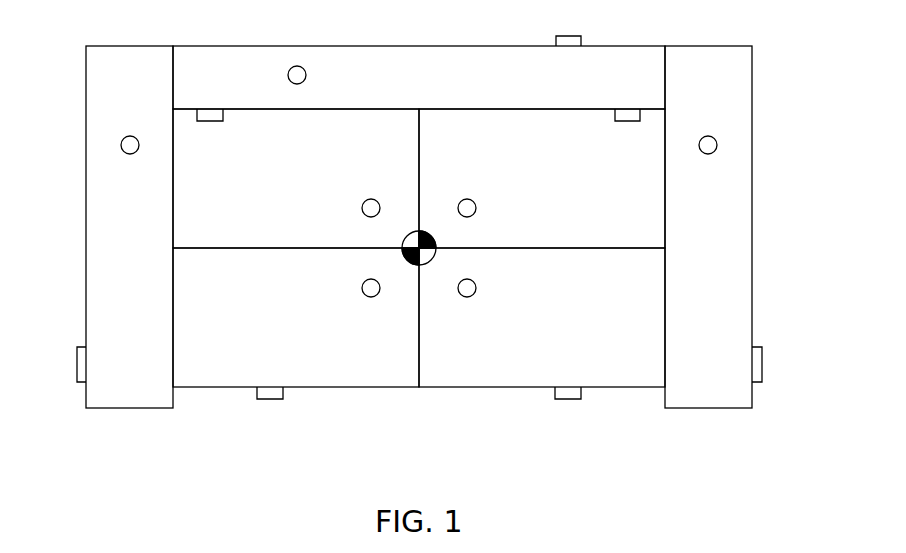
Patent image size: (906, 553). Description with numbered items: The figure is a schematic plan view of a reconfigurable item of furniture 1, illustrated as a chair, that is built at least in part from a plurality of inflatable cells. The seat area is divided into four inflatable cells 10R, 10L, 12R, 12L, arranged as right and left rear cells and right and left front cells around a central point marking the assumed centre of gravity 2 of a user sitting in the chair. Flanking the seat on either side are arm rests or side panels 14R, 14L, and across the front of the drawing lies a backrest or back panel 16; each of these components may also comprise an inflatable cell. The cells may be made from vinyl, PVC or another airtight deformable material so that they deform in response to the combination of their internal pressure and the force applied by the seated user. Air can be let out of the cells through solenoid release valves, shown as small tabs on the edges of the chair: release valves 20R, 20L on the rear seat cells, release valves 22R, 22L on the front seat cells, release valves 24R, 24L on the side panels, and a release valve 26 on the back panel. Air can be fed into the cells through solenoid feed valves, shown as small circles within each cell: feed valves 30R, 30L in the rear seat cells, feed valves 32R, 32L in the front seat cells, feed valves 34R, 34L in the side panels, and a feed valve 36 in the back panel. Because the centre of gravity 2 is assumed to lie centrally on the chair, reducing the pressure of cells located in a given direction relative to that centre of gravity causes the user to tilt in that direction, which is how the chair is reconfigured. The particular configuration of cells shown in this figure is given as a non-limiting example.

The item of furniture 1 is at (695, 423).
The centre of gravity 2 is at (435, 238).
The inflatable cell 10R is at (222, 326).
The inflatable cell 10L is at (569, 326).
The inflatable cell 12R is at (222, 191).
The inflatable cell 12L is at (569, 191).
The arm rest or side panel 14R is at (157, 252).
The arm rest or side panel 14L is at (685, 252).
The backrest or back panel 16 is at (407, 91).
The solenoid release valve 20R is at (269, 411).
The solenoid release valve 20L is at (568, 411).
The solenoid release valve 22R is at (214, 133).
The solenoid release valve 22L is at (630, 133).
The solenoid release valve 24R is at (53, 364).
The solenoid release valve 24L is at (782, 364).
The solenoid release valve 26 is at (567, 26).
The solenoid feed valve 30R is at (370, 306).
The solenoid feed valve 30L is at (467, 306).
The solenoid feed valve 32R is at (370, 193).
The solenoid feed valve 32L is at (467, 193).
The solenoid feed valve 34R is at (132, 162).
The solenoid feed valve 34L is at (708, 162).
The solenoid feed valve 36 is at (279, 75).